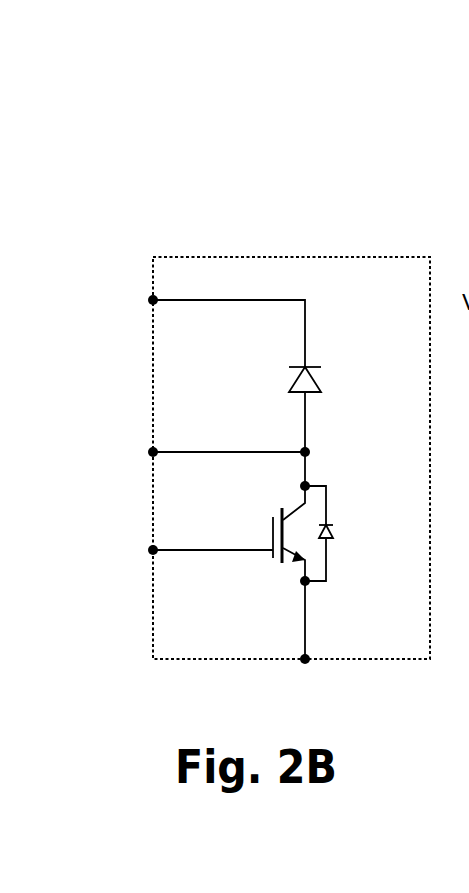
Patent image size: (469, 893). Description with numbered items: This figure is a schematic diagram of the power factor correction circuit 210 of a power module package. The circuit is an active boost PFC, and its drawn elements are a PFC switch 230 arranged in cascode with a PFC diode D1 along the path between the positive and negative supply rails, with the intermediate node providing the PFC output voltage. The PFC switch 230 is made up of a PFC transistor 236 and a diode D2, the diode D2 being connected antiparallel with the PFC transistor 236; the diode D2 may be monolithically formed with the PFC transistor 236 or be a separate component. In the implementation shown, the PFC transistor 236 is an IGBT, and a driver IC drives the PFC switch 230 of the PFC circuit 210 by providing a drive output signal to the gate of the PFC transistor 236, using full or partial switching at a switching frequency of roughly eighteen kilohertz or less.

The power factor correction circuit 210 is at (392, 92).
The PFC switch 230 is at (330, 464).
The PFC transistor 236 is at (272, 522).
The PFC diode D1 is at (314, 365).
The diode D2 is at (340, 519).